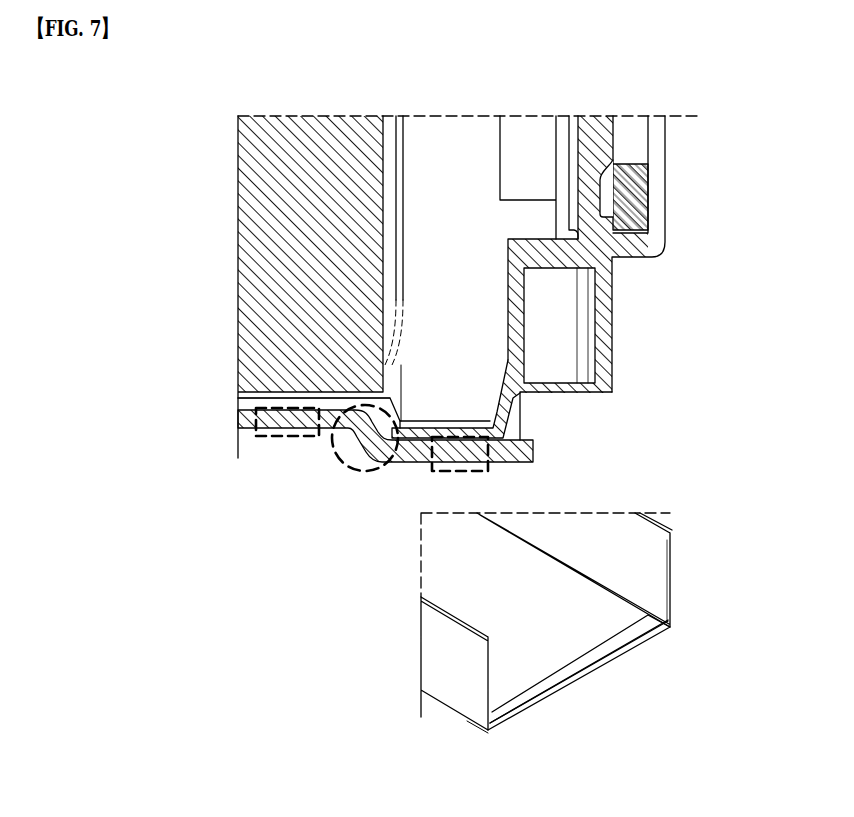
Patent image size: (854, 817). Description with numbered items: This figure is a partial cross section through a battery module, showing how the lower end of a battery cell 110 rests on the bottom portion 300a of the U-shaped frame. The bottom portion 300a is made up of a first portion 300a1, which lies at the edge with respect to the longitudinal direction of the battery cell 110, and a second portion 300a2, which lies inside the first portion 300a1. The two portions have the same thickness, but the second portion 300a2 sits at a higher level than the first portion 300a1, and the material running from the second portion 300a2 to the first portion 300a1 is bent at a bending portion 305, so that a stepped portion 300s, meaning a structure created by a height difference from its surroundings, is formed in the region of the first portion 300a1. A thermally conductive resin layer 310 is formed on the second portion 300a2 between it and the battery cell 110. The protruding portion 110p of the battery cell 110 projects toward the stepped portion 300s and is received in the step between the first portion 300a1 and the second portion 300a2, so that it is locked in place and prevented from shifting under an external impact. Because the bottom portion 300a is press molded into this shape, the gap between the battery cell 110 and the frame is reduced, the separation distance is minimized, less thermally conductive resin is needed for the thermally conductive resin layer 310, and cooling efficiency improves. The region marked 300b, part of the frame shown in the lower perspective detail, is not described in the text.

The battery cell 110 is at (431, 142).
The protruding portion 110p is at (480, 408).
The thermally conductive resin layer 310 is at (300, 402).
The bottom portion of the U-shaped frame 300a is at (718, 694).
The first portion 300a1 is at (481, 472).
The second portion 300a2 is at (277, 438).
The flat portion of plate 300b is at (650, 558).
The bending portion 305 is at (524, 676).
The stepped portion 300s is at (500, 712).